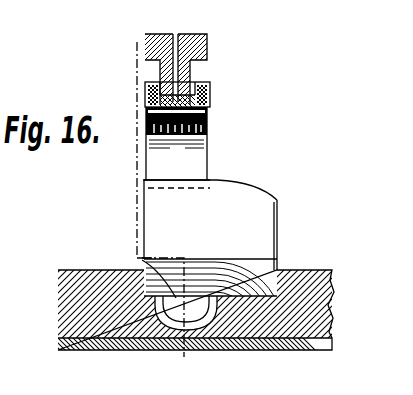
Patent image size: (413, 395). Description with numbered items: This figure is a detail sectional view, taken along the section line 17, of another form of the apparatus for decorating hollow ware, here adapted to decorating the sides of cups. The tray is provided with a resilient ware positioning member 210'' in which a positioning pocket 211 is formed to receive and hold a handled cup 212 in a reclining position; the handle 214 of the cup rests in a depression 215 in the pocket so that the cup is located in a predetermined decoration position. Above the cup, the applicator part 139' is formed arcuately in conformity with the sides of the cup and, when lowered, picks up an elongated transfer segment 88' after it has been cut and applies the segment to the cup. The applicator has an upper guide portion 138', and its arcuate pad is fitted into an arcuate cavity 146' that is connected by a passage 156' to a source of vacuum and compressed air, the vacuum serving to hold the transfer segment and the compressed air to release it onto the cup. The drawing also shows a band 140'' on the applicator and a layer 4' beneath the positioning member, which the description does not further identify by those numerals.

The section line 17 is at (136, 42).
The upper guide portion 138' is at (157, 157).
The passage 156' is at (207, 82).
The applicator part 139' is at (164, 55).
The arcuate cavity 146' is at (214, 114).
The transfer segment 88' is at (210, 183).
The serrated band 140'' is at (139, 145).
The handled cup 212 is at (277, 200).
The positioning pocket 211 is at (276, 234).
The handle 214 is at (210, 282).
The depression 215 is at (141, 258).
The resilient ware positioning member 210'' is at (206, 197).
The sheet layer 4' is at (191, 197).